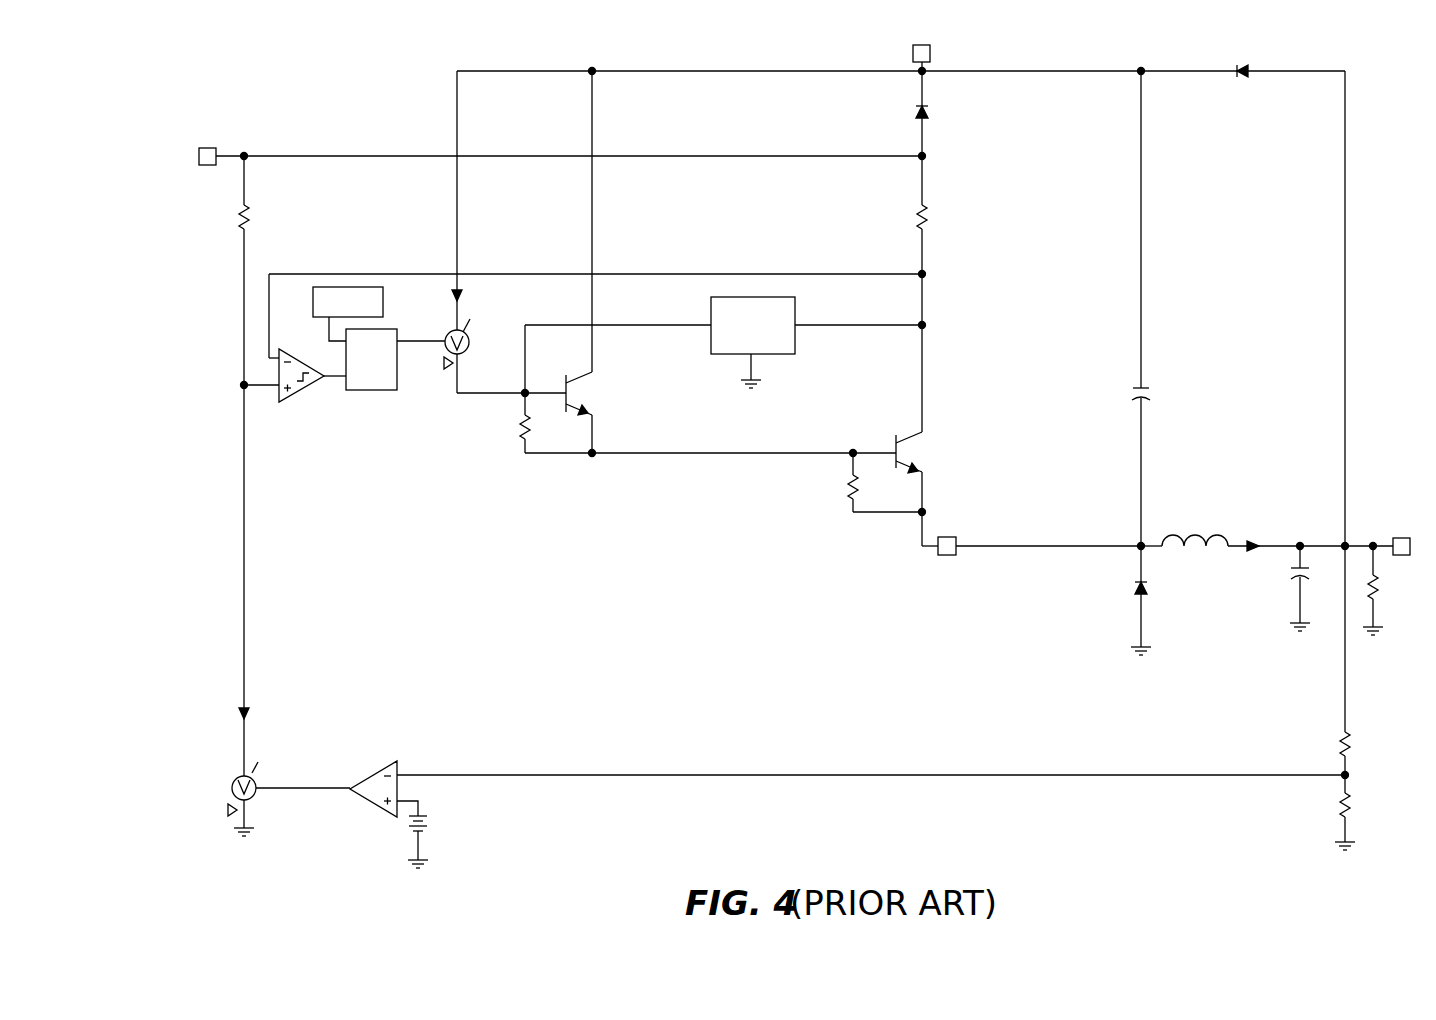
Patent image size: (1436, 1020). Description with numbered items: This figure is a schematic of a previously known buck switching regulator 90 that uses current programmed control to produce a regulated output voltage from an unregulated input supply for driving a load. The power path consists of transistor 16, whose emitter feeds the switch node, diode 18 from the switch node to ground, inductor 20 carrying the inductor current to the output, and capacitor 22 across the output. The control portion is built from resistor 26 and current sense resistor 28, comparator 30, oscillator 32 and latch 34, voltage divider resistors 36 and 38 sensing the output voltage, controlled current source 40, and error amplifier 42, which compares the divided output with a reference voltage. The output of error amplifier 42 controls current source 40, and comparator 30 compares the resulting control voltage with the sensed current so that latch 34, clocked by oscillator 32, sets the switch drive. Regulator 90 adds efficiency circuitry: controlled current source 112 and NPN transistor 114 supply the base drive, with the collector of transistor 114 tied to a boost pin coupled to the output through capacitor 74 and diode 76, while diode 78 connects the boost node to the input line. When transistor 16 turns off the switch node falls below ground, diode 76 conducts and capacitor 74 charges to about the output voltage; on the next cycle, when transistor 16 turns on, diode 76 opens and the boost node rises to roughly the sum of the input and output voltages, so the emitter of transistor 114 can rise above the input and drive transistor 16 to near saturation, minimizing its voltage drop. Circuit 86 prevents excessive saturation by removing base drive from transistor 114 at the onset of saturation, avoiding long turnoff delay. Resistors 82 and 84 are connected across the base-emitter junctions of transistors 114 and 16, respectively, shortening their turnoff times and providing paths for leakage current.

The transistor 16 is at (913, 436).
The diode 18 is at (1147, 589).
The inductor 20 is at (1196, 535).
The capacitor 22 is at (1297, 572).
The resistor 26 is at (249, 212).
The current sense resistor 28 is at (930, 217).
The comparator 30 is at (305, 390).
The oscillator 32 is at (313, 298).
The latch 34 is at (398, 382).
The voltage divider resistor 36 is at (1352, 745).
The voltage divider resistor 38 is at (1352, 805).
The controlled current source 40 is at (232, 784).
The error amplifier 42 is at (370, 772).
The capacitor 74 is at (1148, 396).
The diode 76 is at (1243, 78).
The diode 78 is at (928, 117).
The resistor 82 is at (519, 428).
The resistor 84 is at (849, 488).
The circuit 86 is at (726, 356).
The buck switching regulator 90 is at (788, 450).
The controlled current source 112 is at (470, 340).
The NPN transistor 114 is at (583, 378).